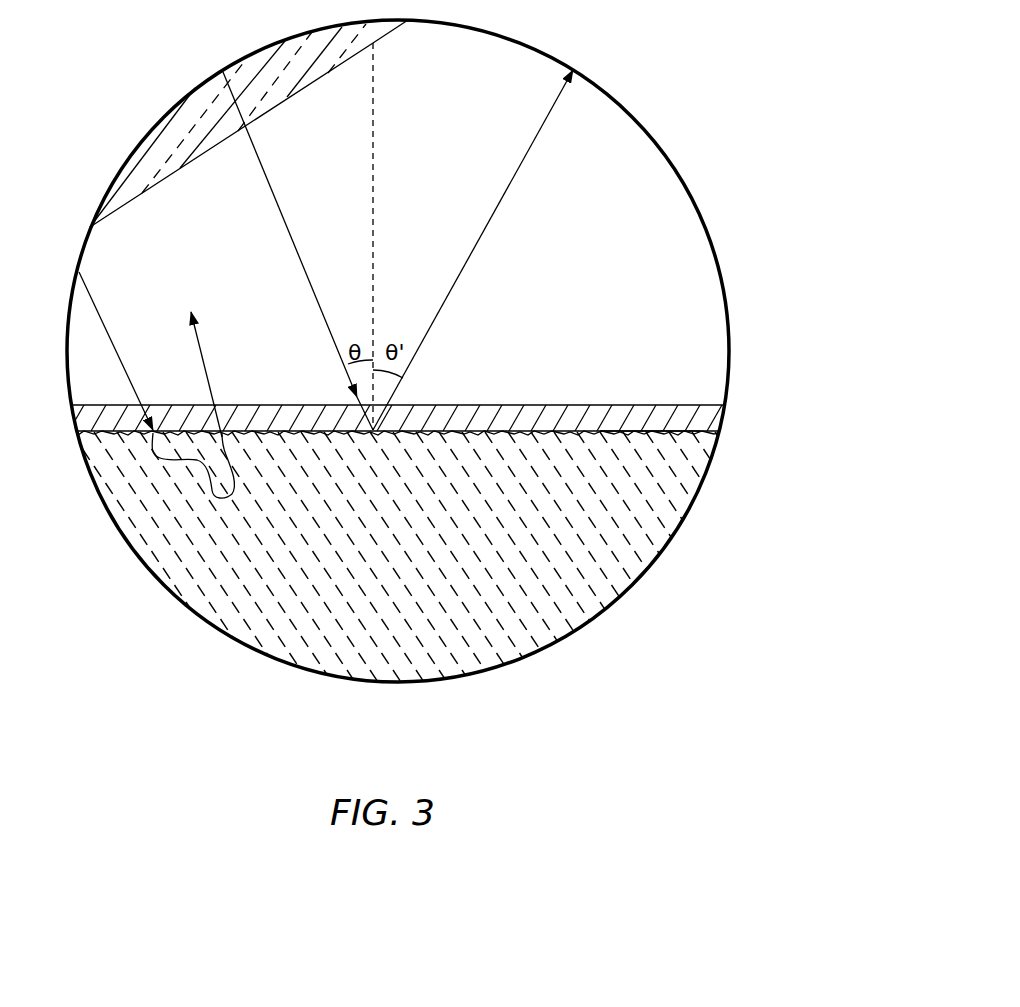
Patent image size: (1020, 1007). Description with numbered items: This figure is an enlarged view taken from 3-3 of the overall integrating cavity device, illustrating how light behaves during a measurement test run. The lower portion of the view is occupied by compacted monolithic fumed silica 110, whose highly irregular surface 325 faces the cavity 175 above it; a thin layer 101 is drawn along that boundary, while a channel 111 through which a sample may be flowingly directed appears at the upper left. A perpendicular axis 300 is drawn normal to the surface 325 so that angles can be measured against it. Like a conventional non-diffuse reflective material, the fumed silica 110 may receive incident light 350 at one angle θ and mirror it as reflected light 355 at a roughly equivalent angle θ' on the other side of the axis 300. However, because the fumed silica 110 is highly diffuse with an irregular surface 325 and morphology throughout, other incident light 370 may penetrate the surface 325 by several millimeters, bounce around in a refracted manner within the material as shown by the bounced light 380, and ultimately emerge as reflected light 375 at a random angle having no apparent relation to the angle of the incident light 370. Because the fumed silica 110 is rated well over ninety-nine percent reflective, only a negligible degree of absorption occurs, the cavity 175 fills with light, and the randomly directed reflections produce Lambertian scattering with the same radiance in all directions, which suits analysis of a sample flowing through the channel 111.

The view location 3-3 is at (615, 100).
The fumed silica 110 is at (421, 579).
The coating layer 101 is at (478, 405).
The surface 325 is at (640, 430).
The cavity 175 is at (586, 326).
The channel 111 is at (267, 60).
The perpendicular axis 300 is at (376, 140).
The incident light 350 is at (262, 165).
The reflected light 355 is at (510, 183).
The incident light 370 is at (98, 313).
The reflected light 375 is at (200, 350).
The refracted bounced around light 380 is at (197, 461).